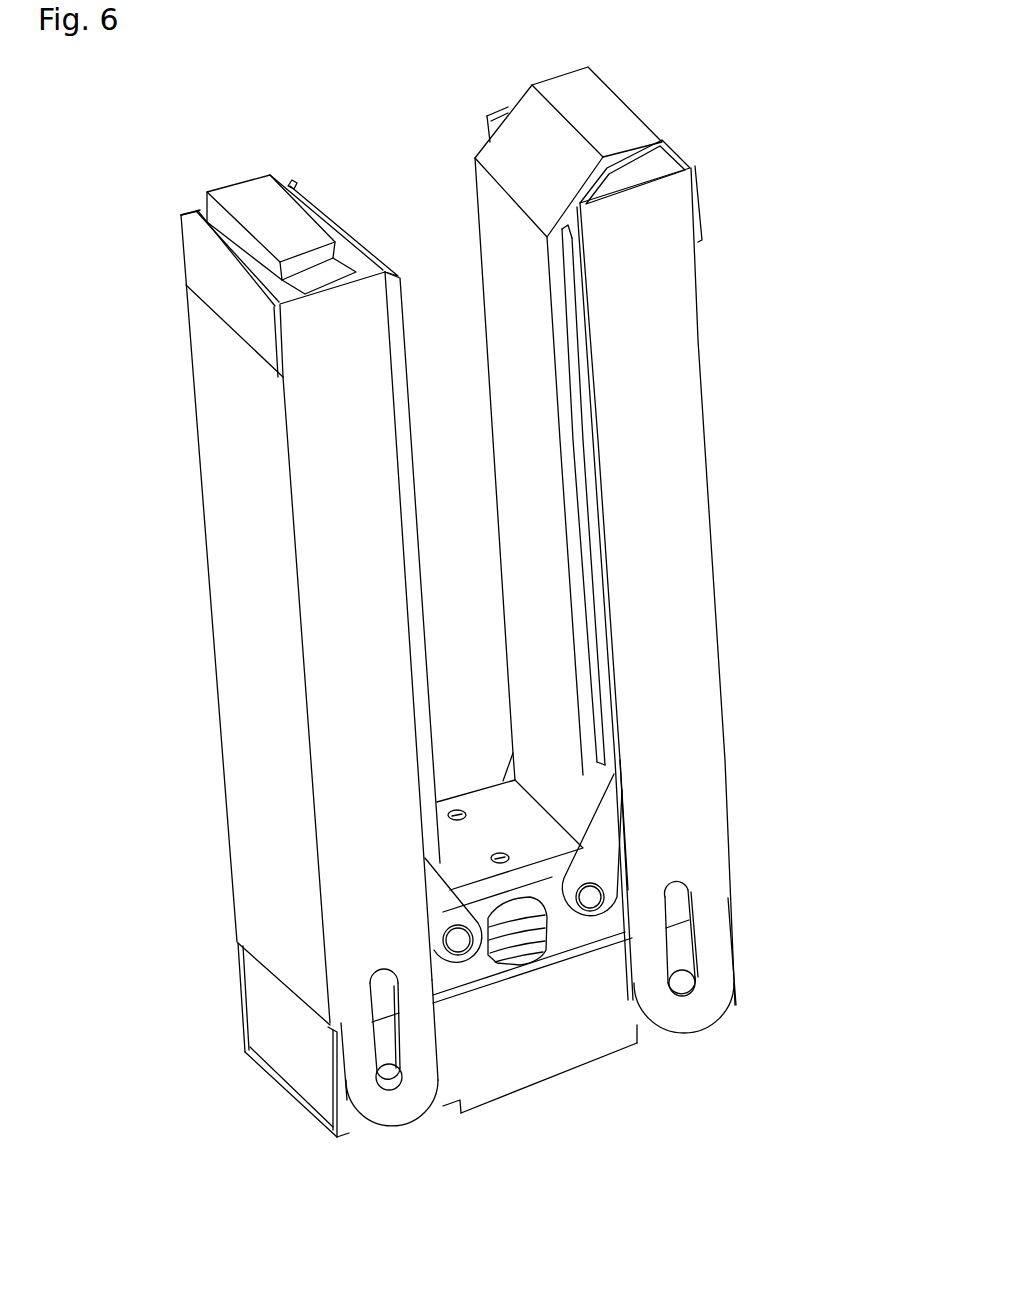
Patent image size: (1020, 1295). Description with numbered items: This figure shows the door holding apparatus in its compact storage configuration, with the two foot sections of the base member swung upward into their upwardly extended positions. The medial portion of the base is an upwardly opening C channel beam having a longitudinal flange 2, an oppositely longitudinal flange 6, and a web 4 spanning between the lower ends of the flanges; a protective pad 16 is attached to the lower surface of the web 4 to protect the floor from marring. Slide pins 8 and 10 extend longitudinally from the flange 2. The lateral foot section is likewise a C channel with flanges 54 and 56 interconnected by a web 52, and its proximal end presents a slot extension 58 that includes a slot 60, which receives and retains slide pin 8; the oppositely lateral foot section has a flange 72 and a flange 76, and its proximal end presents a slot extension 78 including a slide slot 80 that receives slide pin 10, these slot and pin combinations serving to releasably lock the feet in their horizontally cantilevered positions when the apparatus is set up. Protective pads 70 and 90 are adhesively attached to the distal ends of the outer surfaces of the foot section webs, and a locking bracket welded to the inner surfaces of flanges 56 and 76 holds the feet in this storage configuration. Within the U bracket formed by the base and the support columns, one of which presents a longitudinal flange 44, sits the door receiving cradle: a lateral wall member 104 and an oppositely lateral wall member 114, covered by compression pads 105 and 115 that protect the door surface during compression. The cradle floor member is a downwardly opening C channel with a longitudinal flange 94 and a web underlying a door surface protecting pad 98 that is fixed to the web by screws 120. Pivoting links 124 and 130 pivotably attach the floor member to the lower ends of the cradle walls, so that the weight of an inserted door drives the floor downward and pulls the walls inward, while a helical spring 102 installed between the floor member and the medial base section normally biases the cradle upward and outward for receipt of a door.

The longitudinal flange 2 is at (590, 1037).
The web 4 is at (290, 1092).
The oppositely longitudinal flange 6 is at (245, 1002).
The slide pin 8 is at (395, 1077).
The slide pin 10 is at (682, 983).
The protective pad 16 is at (527, 1080).
The longitudinal flange 44 is at (590, 460).
The web 52 is at (236, 667).
The flange 54 is at (332, 502).
The flange 56 is at (298, 185).
The slot extension 58 is at (388, 1103).
The slot 60 is at (385, 1043).
The protective pad 70 is at (195, 262).
The flange 72 is at (665, 332).
The flange 76 is at (494, 110).
The slot extension 78 is at (705, 968).
The slide slot 80 is at (675, 902).
The protective pad 90 is at (697, 202).
The longitudinal flange 94 is at (563, 943).
The door surface protecting pad 98 is at (490, 815).
The helical spring 102 is at (625, 888).
The lateral wall member 104 is at (320, 277).
The compression pad 105 is at (255, 196).
The oppositely lateral wall member 114 is at (655, 163).
The compression pad 115 is at (598, 104).
The screws 120 is at (458, 810).
The pivoting link 124 is at (440, 903).
The pivoting link 130 is at (608, 838).